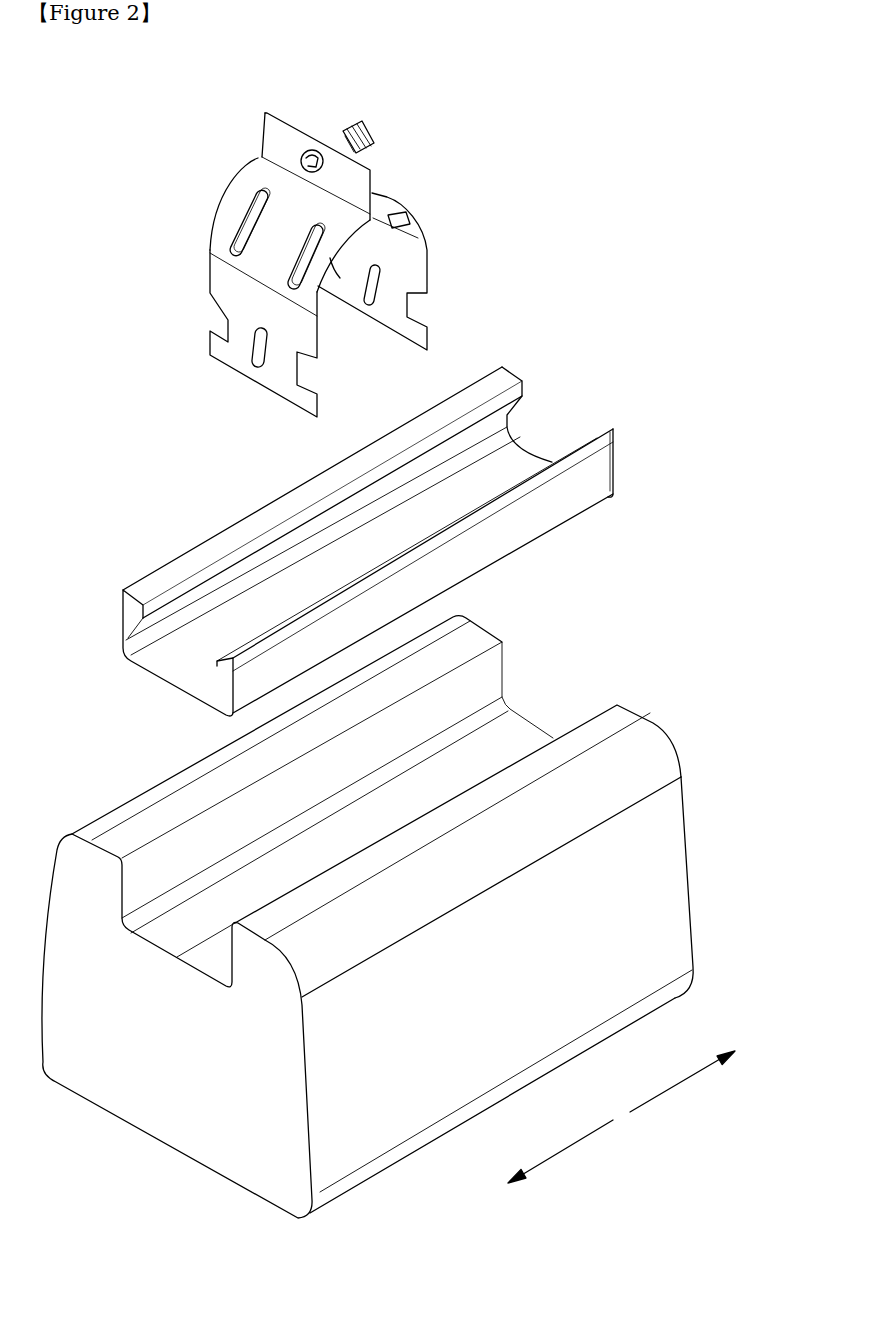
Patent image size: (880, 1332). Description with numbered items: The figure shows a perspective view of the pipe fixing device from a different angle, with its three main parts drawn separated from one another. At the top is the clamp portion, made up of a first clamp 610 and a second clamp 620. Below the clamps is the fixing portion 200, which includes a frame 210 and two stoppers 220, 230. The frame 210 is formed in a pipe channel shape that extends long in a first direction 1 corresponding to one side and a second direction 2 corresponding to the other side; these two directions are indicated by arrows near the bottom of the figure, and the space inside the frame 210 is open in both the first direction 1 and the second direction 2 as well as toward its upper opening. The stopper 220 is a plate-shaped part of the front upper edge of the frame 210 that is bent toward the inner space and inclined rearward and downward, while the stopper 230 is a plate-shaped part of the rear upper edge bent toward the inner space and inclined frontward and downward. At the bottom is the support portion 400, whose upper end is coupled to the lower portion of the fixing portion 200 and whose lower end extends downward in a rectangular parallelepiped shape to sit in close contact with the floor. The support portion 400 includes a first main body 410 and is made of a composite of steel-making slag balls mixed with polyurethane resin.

The fixing portion 200 is at (365, 541).
The frame 210 is at (200, 657).
The stopper 220 is at (213, 560).
The stopper 230 is at (283, 623).
The support portion 400 is at (367, 942).
The first main body 410 is at (455, 1118).
The first clamp 610 is at (225, 210).
The second clamp 620 is at (443, 197).
The first direction 1 is at (560, 1151).
The second direction 2 is at (682, 1086).